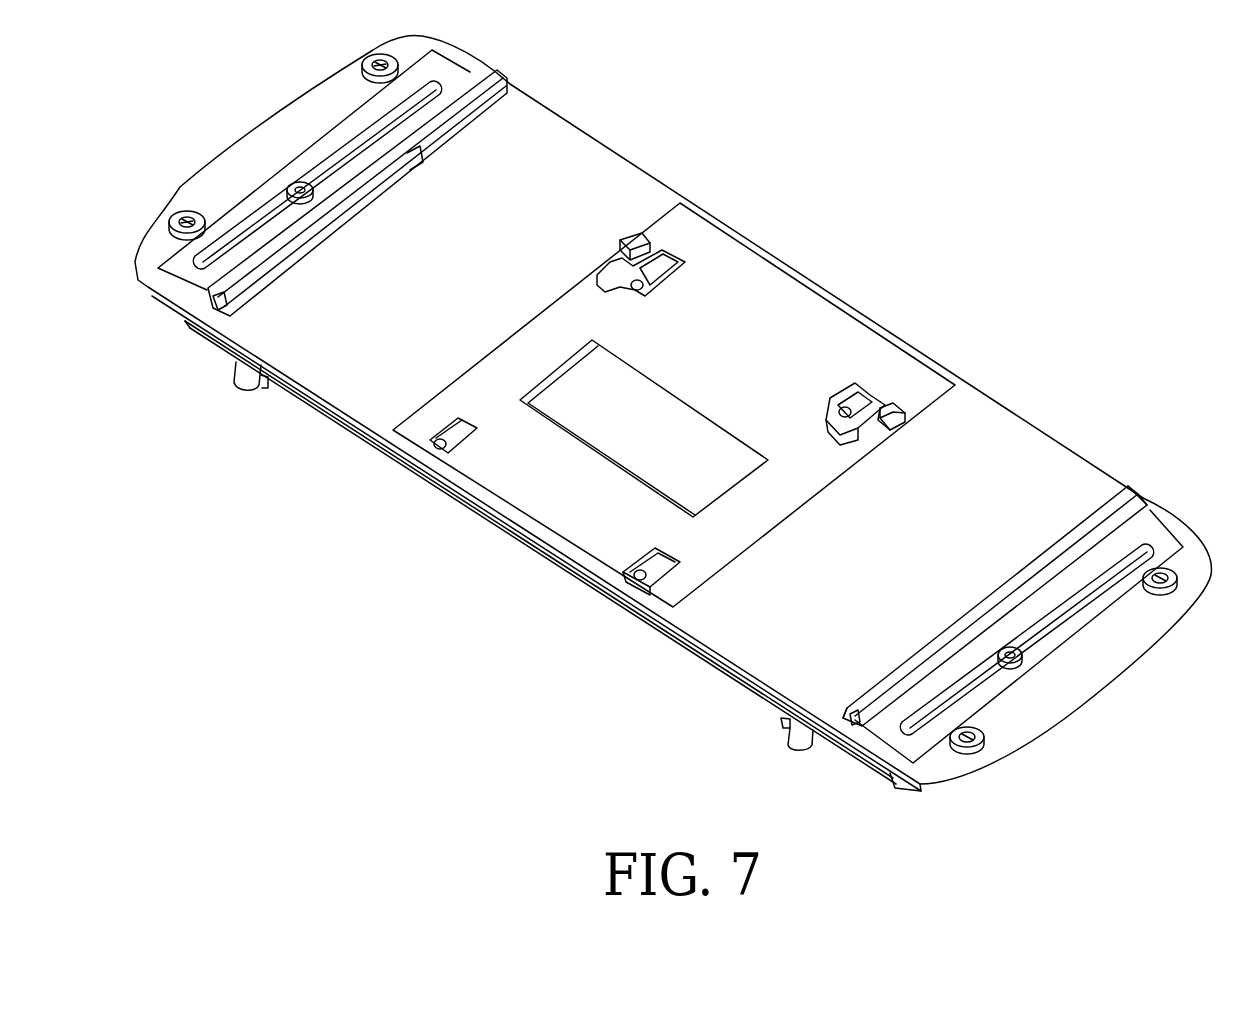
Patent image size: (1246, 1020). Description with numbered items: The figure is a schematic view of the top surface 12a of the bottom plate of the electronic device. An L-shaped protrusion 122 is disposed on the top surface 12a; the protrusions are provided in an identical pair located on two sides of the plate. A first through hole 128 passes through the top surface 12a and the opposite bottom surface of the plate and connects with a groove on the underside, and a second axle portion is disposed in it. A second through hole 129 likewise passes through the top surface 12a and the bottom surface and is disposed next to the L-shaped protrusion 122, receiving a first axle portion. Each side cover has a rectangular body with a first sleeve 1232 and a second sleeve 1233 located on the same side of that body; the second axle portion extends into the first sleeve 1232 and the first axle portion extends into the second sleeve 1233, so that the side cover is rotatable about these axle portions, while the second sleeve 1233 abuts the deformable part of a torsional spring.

The top surface 12a is at (1062, 492).
The L-shaped protrusion 122 is at (893, 407).
The first through hole 128 is at (585, 577).
The second through hole 129 is at (890, 470).
The first sleeve 1232 is at (655, 565).
The second sleeve 1233 is at (866, 395).